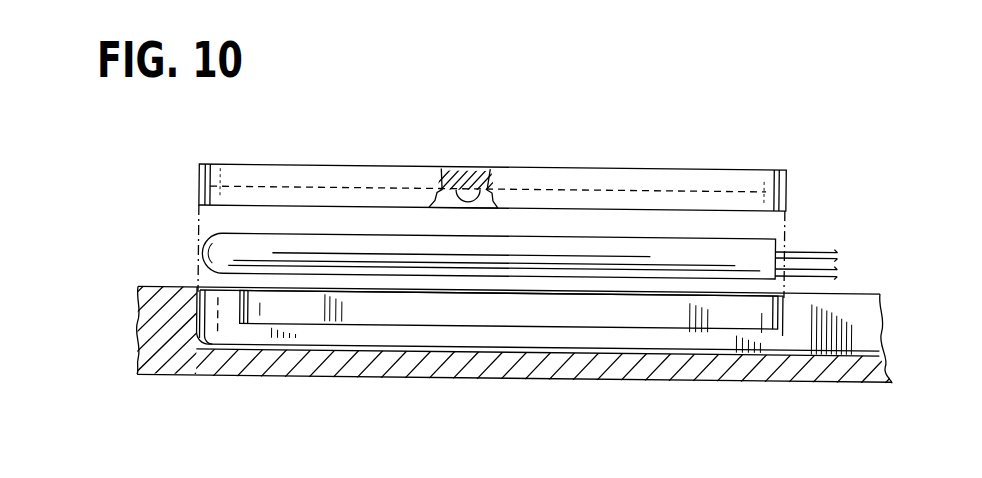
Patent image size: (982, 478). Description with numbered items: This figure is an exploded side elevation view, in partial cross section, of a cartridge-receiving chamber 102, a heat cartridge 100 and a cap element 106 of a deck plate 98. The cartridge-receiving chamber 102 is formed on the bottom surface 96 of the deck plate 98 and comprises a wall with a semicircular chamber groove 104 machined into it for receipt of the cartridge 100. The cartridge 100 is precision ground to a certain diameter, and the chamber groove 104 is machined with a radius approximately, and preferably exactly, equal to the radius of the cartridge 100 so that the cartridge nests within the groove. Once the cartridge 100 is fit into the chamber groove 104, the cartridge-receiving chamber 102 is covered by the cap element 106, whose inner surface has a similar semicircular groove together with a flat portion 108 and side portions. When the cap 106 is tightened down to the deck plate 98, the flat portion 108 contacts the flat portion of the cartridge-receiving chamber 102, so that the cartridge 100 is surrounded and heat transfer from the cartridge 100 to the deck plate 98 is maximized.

The bottom surface 96 is at (158, 288).
The deck plate 98 is at (152, 357).
The heat cartridge 100 is at (199, 256).
The cartridge-receiving chamber 102 is at (252, 337).
The chamber groove 104 is at (372, 322).
The cap element 106 is at (688, 180).
The flat portion 108 is at (480, 168).